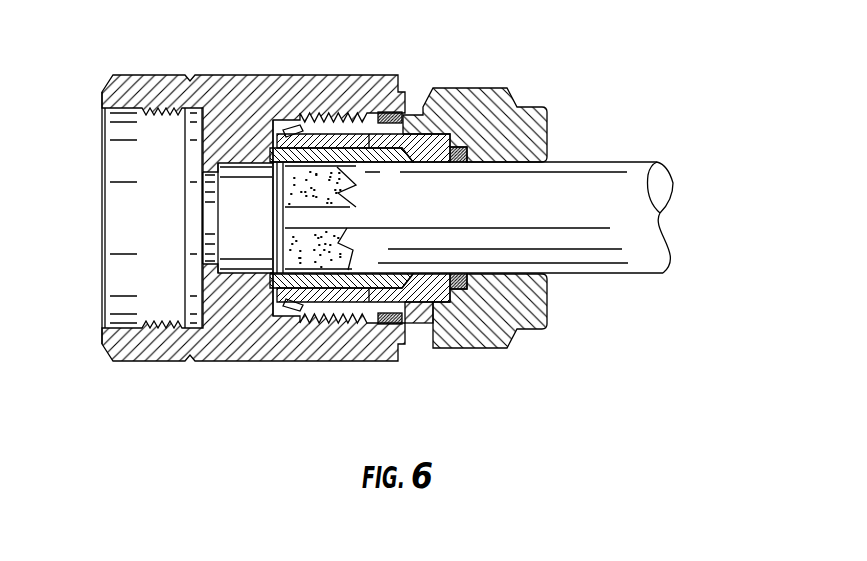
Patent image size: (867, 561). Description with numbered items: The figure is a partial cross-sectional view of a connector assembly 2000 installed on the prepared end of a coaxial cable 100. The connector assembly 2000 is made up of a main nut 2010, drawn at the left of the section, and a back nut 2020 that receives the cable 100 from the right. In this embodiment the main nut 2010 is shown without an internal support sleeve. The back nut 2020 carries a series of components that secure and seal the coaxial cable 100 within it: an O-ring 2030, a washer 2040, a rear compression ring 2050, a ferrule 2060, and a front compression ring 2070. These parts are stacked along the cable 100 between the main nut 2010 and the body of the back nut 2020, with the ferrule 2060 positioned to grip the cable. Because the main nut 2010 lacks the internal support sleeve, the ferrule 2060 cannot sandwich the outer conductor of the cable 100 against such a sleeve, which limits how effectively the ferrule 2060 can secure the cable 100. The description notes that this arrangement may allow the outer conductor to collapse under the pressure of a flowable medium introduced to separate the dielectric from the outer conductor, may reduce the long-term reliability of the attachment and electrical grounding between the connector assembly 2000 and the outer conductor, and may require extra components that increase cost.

The coaxial cable 100 is at (634, 144).
The connector assembly 2000 is at (368, 254).
The main nut 2010 is at (158, 87).
The back nut 2020 is at (472, 110).
The O-ring 2030 is at (460, 284).
The washer 2040 is at (485, 348).
The rear compression ring 2050 is at (425, 322).
The ferrule 2060 is at (390, 263).
The front compression ring 2070 is at (314, 299).